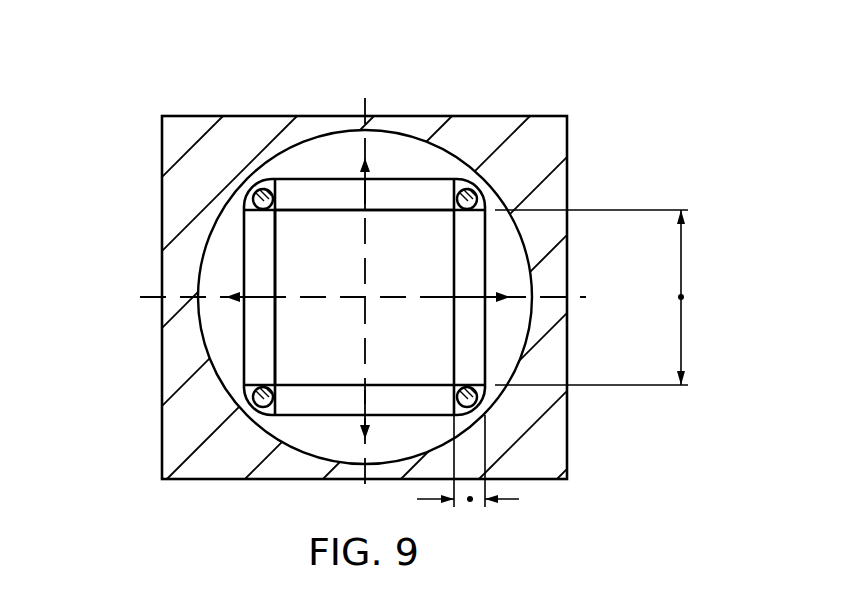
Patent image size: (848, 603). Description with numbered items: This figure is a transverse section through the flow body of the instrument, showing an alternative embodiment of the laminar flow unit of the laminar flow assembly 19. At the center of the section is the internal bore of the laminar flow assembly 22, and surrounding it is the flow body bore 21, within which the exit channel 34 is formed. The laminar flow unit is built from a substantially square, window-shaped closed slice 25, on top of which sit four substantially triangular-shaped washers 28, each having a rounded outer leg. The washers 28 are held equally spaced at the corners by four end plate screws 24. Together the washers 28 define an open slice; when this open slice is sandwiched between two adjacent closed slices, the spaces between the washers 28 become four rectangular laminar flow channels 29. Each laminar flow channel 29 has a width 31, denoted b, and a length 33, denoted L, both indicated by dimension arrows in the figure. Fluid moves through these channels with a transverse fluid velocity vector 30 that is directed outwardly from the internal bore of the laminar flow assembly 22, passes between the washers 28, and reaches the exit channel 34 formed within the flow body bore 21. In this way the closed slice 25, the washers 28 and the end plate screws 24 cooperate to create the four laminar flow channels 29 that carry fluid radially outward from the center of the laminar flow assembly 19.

The laminar flow assembly 19 is at (230, 357).
The flow body bore 21 is at (275, 157).
The internal bore of the laminar flow assembly 22 is at (277, 322).
The end plate screws 24 is at (495, 204).
The closed slice 25 is at (315, 178).
The washers 28 is at (510, 216).
The laminar flow channels 29 is at (333, 175).
The transverse fluid velocity vector 30 is at (376, 200).
The width 31 is at (681, 297).
The length 33 is at (470, 499).
The exit channel 34 is at (481, 183).